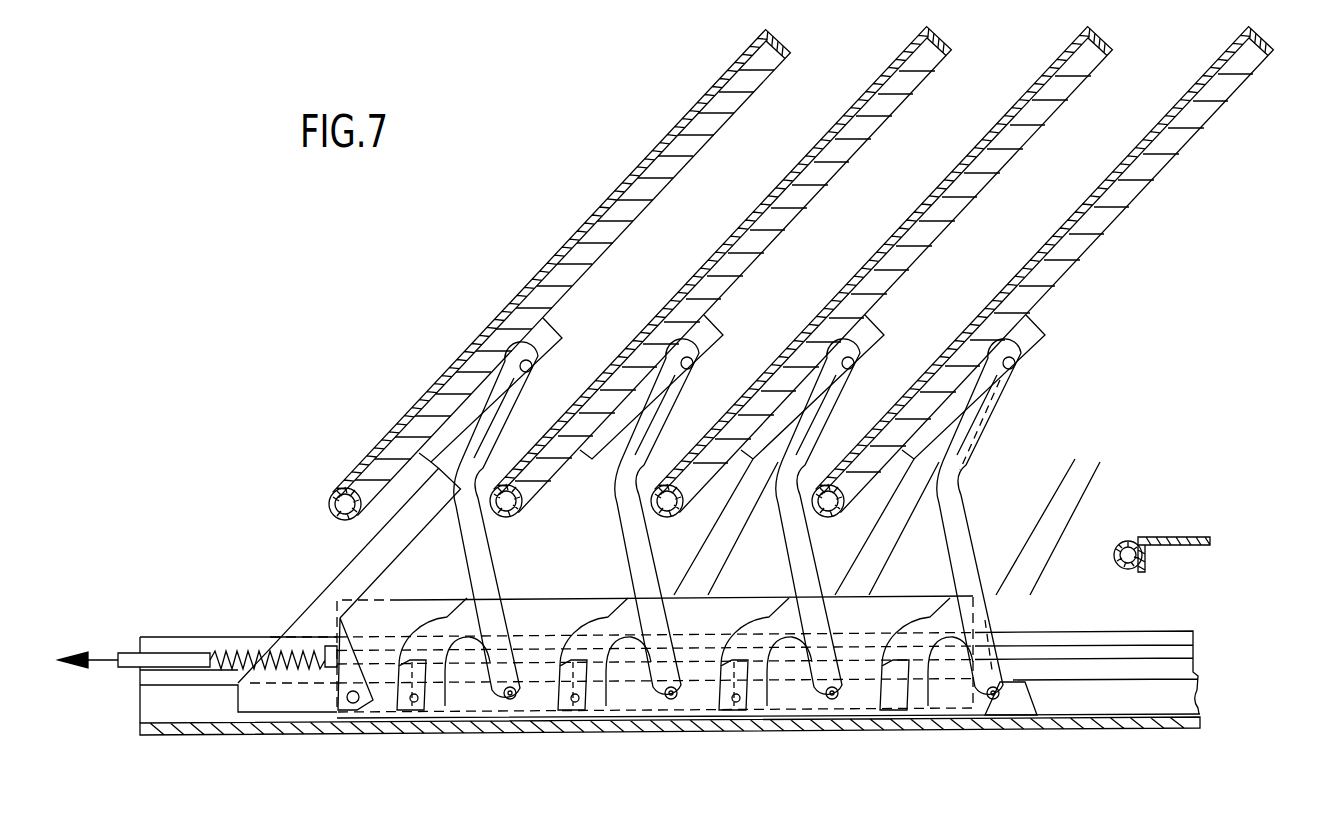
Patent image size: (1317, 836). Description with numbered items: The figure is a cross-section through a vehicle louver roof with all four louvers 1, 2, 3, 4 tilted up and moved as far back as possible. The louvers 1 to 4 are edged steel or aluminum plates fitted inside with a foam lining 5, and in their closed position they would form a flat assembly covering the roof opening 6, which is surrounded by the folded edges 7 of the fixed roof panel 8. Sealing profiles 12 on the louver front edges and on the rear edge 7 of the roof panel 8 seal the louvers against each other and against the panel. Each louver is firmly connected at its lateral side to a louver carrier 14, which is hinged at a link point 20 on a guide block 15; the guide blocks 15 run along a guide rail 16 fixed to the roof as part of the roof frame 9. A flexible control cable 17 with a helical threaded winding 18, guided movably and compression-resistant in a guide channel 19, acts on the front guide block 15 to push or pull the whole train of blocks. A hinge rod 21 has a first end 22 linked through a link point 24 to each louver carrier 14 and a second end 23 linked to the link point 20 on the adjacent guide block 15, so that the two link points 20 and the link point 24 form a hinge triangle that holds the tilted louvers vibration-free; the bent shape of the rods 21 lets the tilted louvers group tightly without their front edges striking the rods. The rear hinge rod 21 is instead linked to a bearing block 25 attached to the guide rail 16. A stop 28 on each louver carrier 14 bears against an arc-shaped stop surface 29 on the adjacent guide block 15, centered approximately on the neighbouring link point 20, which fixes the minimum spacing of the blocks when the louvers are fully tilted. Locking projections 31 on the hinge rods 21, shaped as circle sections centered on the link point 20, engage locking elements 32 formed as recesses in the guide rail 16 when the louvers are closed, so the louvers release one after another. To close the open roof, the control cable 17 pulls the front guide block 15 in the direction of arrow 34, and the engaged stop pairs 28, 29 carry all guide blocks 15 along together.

The louver 1 is at (656, 148).
The louver 2 is at (800, 188).
The louver 3 is at (957, 188).
The louver 4 is at (1118, 188).
The foam lining 5 is at (768, 66).
The roof opening 6 is at (203, 539).
The folded edge 7 is at (1147, 558).
The roof panel 8 is at (1180, 536).
The roof frame 9 is at (200, 636).
The sealing profile 12 is at (327, 502).
The louver carrier 14 is at (556, 327).
The guide block 15 is at (384, 706).
The guide rail 16 is at (186, 737).
The control cable 17 is at (122, 652).
The helical threaded winding 18 is at (232, 652).
The guide channel 19 is at (1152, 652).
The link point 20 is at (352, 704).
The hinge rod 21 is at (466, 554).
The first end 22 is at (1002, 388).
The second end 23 is at (994, 668).
The link point 24 is at (540, 365).
The bearing block 25 is at (1030, 693).
The stop 28 is at (416, 704).
The stop surface 29 is at (905, 706).
The locking projection 31 is at (462, 706).
The locking element 32 is at (292, 735).
The arrow 34 is at (98, 652).